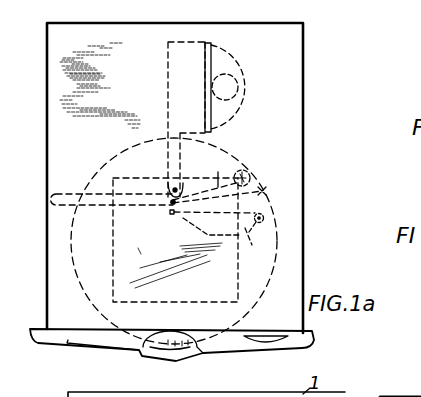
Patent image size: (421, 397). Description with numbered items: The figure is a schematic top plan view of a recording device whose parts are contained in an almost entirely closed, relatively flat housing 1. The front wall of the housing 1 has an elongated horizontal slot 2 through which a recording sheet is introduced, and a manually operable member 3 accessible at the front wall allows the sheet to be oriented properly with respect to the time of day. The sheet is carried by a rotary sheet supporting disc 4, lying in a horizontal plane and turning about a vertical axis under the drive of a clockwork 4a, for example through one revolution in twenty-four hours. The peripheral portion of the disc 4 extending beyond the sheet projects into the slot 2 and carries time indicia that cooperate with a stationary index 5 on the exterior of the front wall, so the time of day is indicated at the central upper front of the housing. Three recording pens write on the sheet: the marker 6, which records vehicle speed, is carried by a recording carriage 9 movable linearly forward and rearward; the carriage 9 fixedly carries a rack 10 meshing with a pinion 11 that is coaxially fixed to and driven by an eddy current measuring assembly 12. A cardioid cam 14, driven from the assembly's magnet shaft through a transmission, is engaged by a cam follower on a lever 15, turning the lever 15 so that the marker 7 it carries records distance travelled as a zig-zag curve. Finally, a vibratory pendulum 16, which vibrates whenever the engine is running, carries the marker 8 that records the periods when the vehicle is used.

The housing 1 is at (110, 33).
The elongated horizontal slot 2 is at (145, 355).
The manually operable member 3 is at (266, 340).
The rotary sheet supporting disc 4 is at (263, 189).
The clockwork 4a is at (174, 241).
The stationary index 5 is at (174, 332).
The marker 6 is at (174, 189).
The marker 7 is at (176, 200).
The marker 8 is at (170, 214).
The recording carriage 9 is at (172, 88).
The rack 10 is at (210, 69).
The pinion 11 is at (232, 96).
The eddy current measuring assembly 12 is at (258, 84).
The cam 14 is at (241, 171).
The lever 15 is at (146, 179).
The vibratory pendulum 16 is at (246, 233).